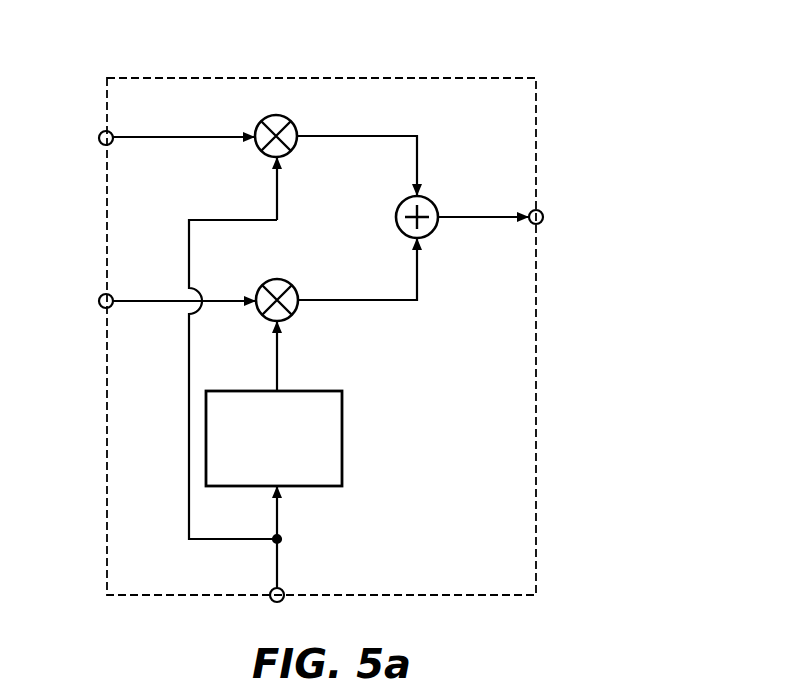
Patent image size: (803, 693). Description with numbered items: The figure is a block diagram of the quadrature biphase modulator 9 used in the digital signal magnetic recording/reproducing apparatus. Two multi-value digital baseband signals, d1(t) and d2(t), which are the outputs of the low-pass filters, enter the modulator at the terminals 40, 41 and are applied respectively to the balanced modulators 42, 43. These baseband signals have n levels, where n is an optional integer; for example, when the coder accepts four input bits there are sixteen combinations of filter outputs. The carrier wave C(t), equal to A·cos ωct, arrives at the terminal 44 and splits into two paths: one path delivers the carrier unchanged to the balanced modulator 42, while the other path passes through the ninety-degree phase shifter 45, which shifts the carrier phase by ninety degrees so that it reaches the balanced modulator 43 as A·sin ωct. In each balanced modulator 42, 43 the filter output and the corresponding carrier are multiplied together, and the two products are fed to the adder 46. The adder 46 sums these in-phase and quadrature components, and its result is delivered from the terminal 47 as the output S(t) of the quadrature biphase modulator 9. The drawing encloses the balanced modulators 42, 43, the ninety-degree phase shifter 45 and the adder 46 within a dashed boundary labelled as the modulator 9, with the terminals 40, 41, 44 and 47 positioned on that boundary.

The quadrature biphase modulator 9 is at (128, 78).
The terminal 40 is at (99, 139).
The terminal 41 is at (99, 300).
The balanced modulator 42 is at (281, 114).
The balanced modulator 43 is at (279, 279).
The terminal 44 is at (280, 602).
The 90° shifter 45 is at (343, 446).
The adder 46 is at (437, 212).
The terminal 47 is at (544, 221).